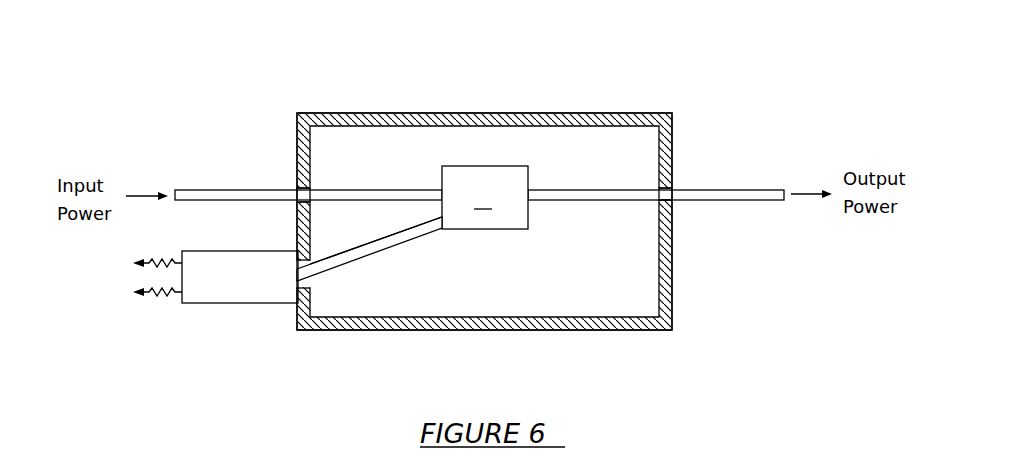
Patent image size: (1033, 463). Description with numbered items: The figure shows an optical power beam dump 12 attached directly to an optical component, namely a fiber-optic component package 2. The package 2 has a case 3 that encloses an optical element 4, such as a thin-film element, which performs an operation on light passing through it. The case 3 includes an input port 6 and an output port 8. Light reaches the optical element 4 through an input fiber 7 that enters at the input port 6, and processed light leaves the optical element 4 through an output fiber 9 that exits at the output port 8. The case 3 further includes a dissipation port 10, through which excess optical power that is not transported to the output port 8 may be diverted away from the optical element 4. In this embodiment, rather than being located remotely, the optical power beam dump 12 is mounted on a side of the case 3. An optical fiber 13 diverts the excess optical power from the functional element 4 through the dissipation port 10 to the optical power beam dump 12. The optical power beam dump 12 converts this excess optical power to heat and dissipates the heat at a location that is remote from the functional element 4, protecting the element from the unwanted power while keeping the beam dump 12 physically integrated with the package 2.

The fiber-optic component package 2 is at (399, 96).
The case 3 is at (597, 112).
The optical element 4 is at (485, 197).
The input port 6 is at (297, 189).
The input fiber 7 is at (227, 190).
The output port 8 is at (673, 188).
The output fiber 9 is at (757, 189).
The dissipation port 10 is at (311, 283).
The optical power beam dump 12 is at (247, 303).
The optical fiber 13 is at (397, 246).